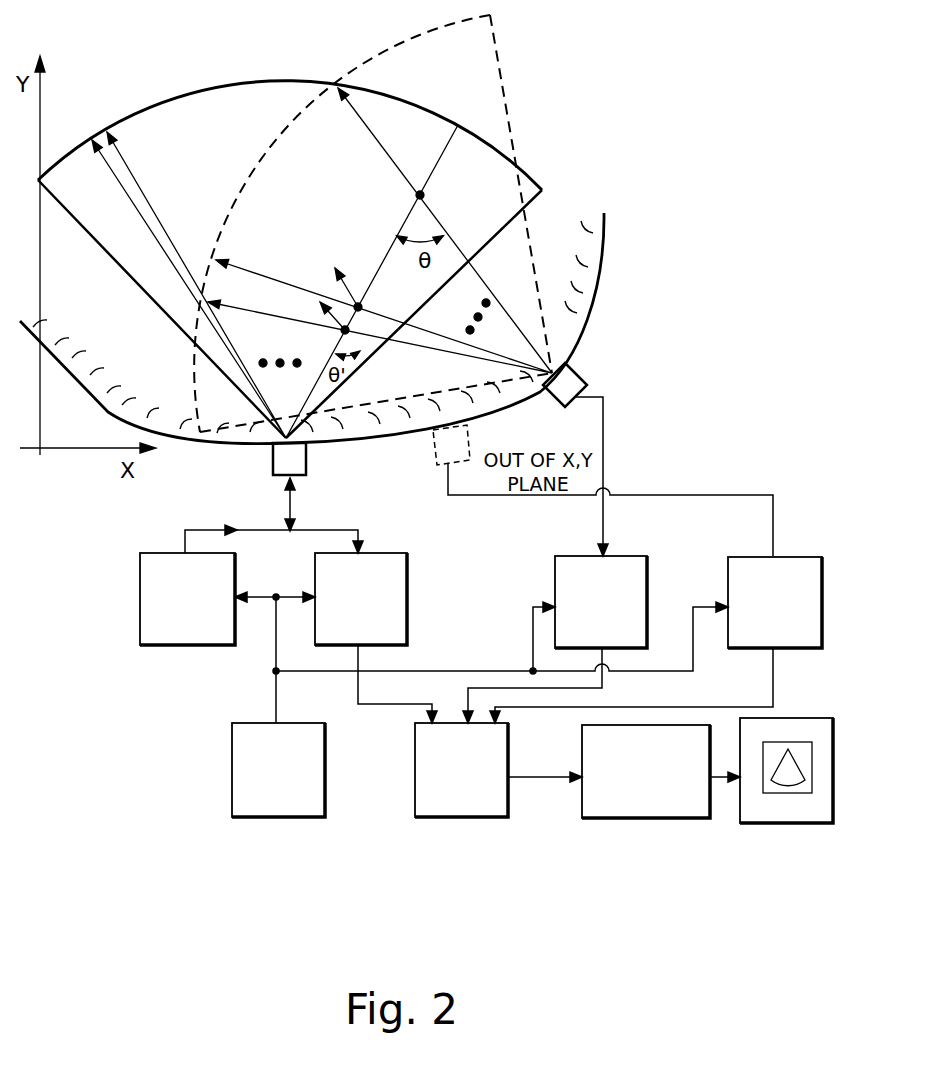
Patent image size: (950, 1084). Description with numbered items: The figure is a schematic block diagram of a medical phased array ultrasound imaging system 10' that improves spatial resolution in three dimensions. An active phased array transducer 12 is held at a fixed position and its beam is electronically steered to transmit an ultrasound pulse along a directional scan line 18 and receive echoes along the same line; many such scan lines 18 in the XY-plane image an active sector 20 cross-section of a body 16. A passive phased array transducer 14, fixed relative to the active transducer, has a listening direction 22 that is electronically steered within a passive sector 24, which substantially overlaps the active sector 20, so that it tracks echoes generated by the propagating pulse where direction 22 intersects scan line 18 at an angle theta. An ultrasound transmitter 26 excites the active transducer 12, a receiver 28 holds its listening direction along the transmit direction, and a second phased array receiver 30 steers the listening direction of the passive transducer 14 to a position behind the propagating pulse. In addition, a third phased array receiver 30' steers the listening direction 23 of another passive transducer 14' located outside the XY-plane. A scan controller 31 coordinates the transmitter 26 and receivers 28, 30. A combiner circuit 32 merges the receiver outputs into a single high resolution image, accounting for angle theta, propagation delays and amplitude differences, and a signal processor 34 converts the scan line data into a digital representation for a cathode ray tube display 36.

The medical phased array ultrasound imaging system 10' is at (657, 129).
The active phased array transducer 12 is at (306, 457).
The passive phased array transducer 14 is at (596, 385).
The passive transducer 14' is at (482, 438).
The body 16 is at (596, 277).
The scan line 18 is at (135, 207).
The active sector 20 is at (147, 103).
The listening direction 22 is at (361, 118).
The listening direction 23 is at (344, 286).
The passive sector 24 is at (500, 47).
The ultrasound transmitter 26 is at (140, 582).
The receiver 28 is at (407, 570).
The second phased array receiver 30 is at (628, 590).
The third phased array receiver 30' is at (800, 594).
The scan controller 31 is at (325, 770).
The combiner circuit 32 is at (508, 742).
The signal processor 34 is at (647, 818).
The cathode ray tube display 36 is at (800, 718).